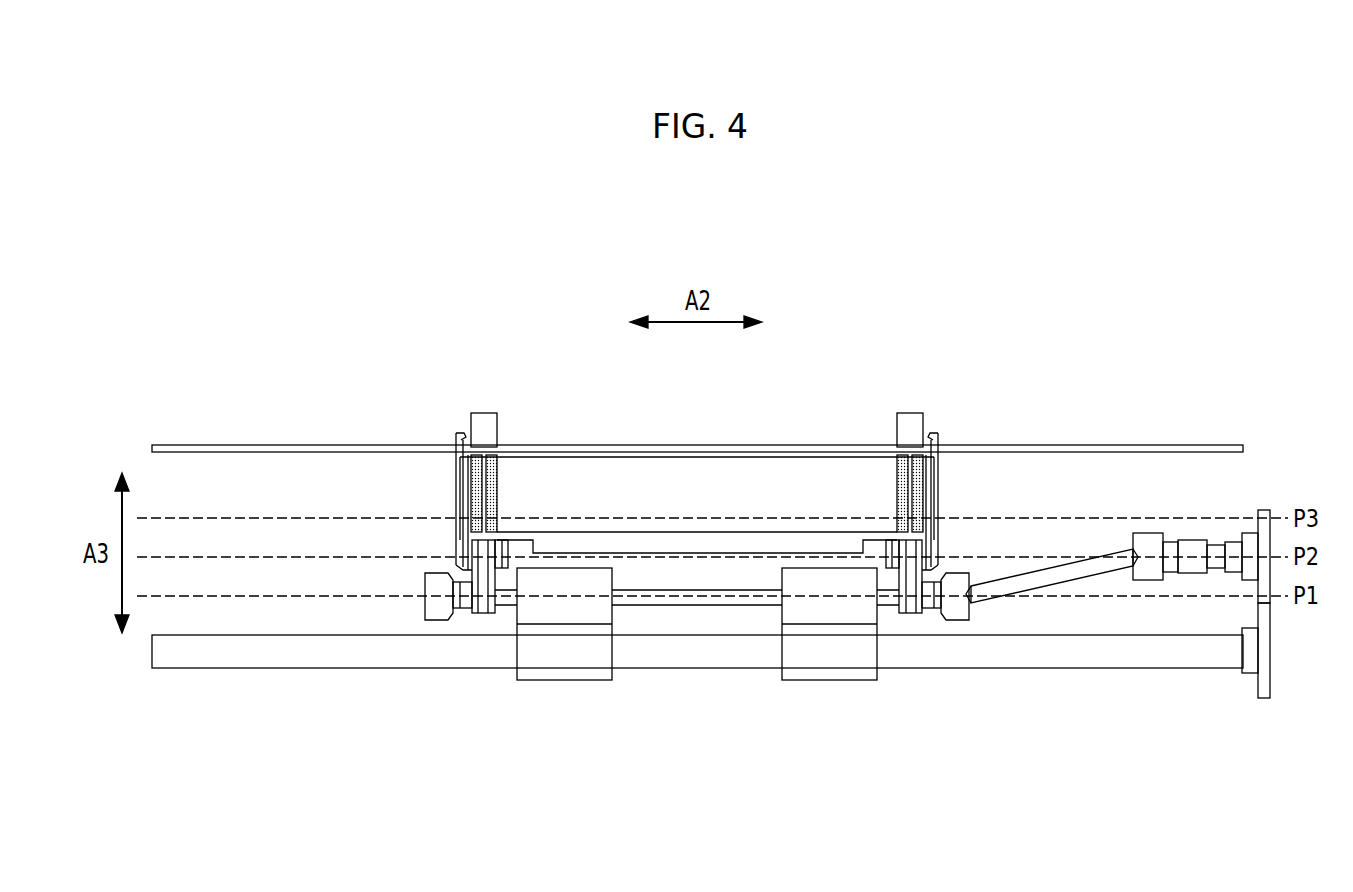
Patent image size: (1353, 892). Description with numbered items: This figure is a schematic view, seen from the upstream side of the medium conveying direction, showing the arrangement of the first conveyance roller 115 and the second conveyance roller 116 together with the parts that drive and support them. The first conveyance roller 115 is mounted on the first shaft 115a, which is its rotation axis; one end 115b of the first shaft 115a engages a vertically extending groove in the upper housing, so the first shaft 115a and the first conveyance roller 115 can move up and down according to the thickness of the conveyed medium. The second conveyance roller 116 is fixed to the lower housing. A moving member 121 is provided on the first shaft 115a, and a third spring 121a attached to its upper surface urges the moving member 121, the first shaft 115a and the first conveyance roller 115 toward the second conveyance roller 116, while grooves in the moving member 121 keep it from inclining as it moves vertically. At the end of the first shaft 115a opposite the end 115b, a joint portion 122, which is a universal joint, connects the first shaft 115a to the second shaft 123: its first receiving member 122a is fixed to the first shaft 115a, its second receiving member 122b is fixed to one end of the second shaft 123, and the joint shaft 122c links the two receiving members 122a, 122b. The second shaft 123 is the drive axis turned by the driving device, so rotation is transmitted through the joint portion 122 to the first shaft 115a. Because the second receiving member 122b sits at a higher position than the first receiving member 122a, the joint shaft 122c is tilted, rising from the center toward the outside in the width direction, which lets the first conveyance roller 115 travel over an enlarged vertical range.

The first conveyance roller 115 is at (580, 582).
The first shaft 115a is at (697, 603).
The one end of the first shaft 115b is at (436, 610).
The second conveyance roller 116 is at (563, 662).
The moving member 121 is at (487, 615).
The third spring 121a is at (490, 520).
The joint portion 122 is at (1050, 593).
The first receiving member 122a is at (958, 610).
The second receiving member 122b is at (1148, 545).
The joint shaft 122c is at (1033, 580).
The second shaft 123 is at (1215, 550).